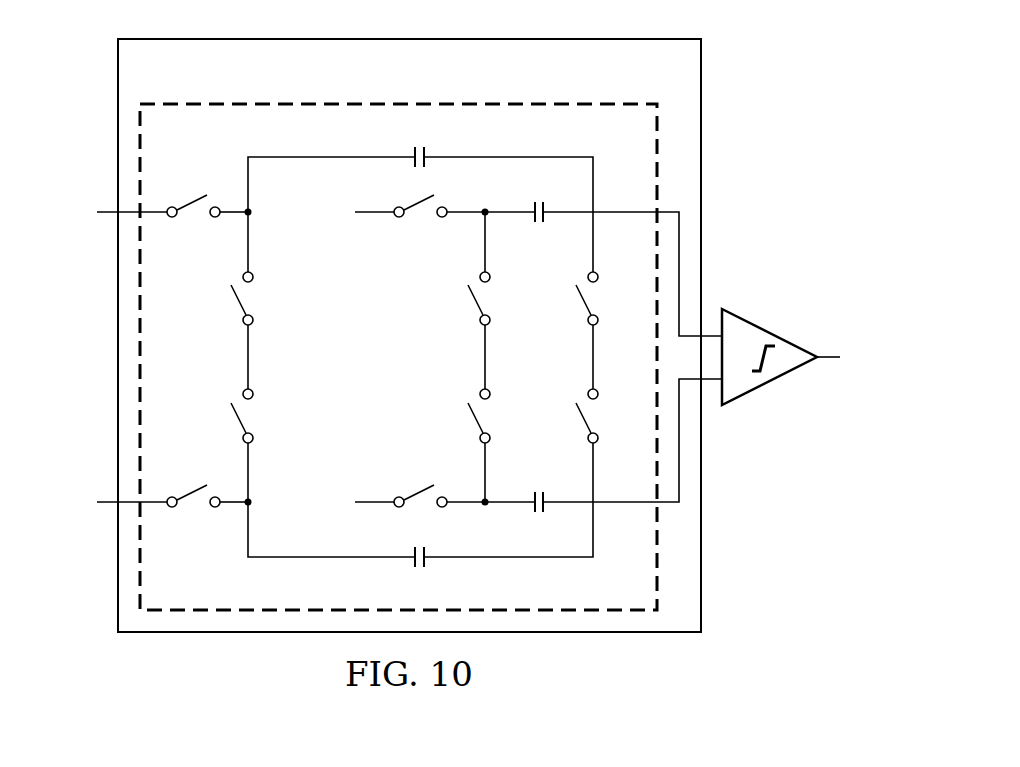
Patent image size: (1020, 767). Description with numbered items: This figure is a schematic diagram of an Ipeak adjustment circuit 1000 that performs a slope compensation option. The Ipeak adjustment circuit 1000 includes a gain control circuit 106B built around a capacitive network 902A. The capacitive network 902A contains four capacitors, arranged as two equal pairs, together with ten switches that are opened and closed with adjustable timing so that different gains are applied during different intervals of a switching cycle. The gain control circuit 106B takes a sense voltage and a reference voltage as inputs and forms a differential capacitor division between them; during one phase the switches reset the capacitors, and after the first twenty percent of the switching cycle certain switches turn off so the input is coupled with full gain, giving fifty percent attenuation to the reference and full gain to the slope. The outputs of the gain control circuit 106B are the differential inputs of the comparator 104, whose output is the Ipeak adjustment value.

The Ipeak adjustment circuit 1000 is at (748, 65).
The gain control circuit 106B is at (703, 157).
The capacitive network 902A is at (245, 102).
The comparator 104 is at (770, 328).